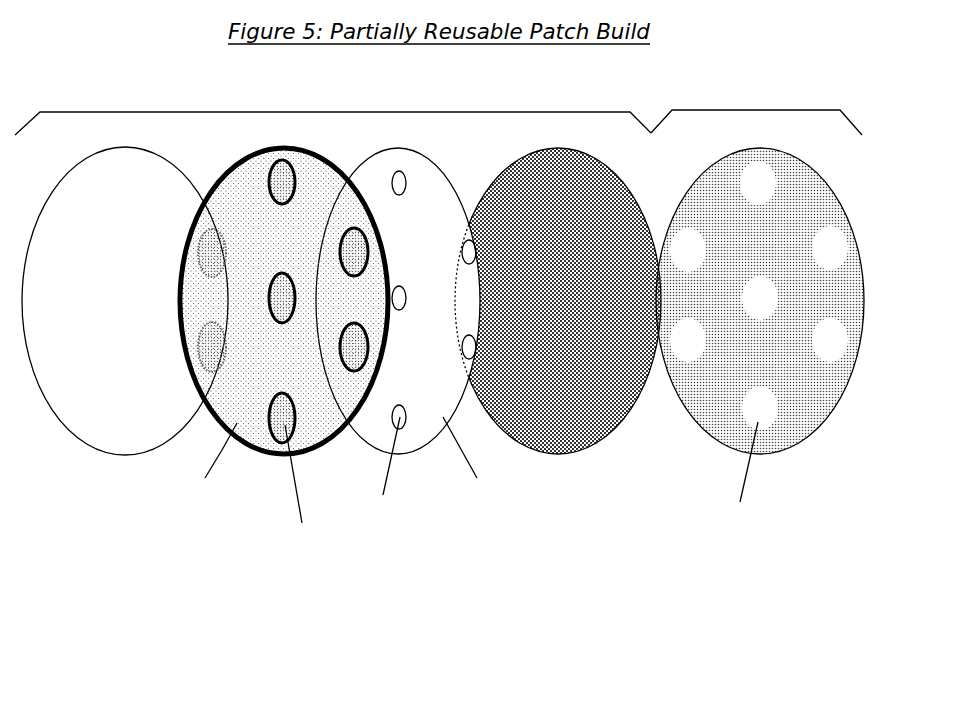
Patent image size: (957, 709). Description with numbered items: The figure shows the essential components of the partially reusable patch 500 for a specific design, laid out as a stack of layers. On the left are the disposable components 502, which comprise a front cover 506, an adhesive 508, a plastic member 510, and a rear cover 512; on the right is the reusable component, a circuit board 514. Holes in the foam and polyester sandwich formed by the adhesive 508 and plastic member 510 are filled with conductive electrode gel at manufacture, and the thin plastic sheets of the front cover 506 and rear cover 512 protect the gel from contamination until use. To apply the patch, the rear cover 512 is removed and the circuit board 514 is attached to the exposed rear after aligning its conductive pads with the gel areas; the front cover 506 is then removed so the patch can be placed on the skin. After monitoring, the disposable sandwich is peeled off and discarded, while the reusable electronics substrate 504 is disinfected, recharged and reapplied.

The partially reusable patch 500 is at (428, 697).
The disposable components 502 is at (68, 107).
The reusable electronics substrate 504 is at (740, 72).
The front cover 506 is at (97, 450).
The adhesive 508 is at (205, 379).
The plastic member 510 is at (418, 453).
The rear cover 512 is at (573, 453).
The circuit board 514 is at (791, 450).